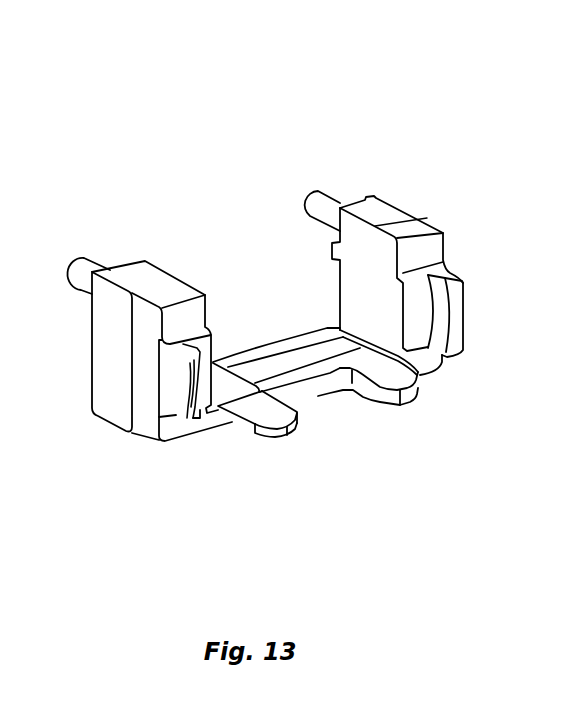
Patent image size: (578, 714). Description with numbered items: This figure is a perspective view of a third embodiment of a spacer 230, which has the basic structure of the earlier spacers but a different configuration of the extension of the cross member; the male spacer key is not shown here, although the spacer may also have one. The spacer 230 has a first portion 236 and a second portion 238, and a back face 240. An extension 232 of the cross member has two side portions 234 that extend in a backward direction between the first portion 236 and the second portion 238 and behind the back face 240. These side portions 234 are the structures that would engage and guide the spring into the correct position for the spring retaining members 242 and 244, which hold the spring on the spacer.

The spacer 230 is at (354, 127).
The extension 232 is at (318, 398).
The side portions 234 is at (276, 438).
The first portion 236 is at (91, 375).
The second portion 238 is at (445, 250).
The back face 240 is at (420, 243).
The spring retaining member 242 is at (182, 394).
The spring retaining member 244 is at (465, 318).